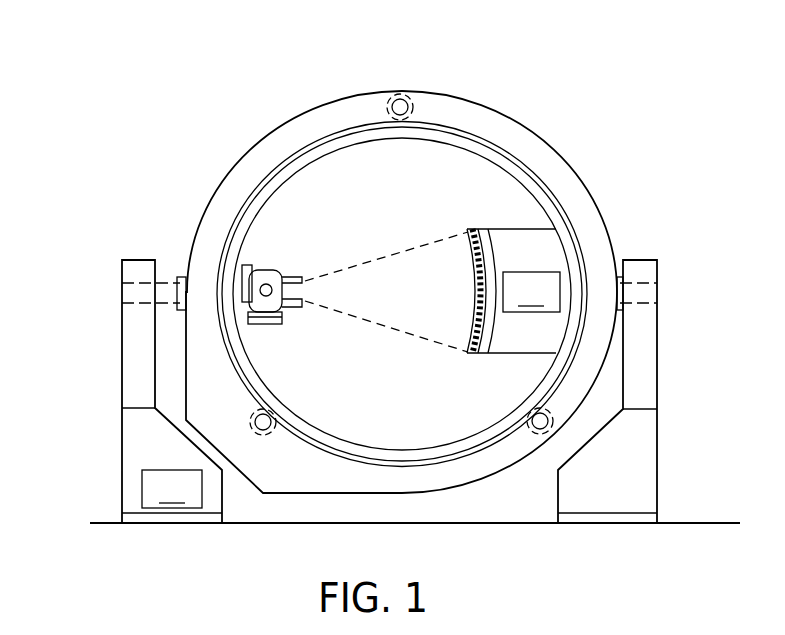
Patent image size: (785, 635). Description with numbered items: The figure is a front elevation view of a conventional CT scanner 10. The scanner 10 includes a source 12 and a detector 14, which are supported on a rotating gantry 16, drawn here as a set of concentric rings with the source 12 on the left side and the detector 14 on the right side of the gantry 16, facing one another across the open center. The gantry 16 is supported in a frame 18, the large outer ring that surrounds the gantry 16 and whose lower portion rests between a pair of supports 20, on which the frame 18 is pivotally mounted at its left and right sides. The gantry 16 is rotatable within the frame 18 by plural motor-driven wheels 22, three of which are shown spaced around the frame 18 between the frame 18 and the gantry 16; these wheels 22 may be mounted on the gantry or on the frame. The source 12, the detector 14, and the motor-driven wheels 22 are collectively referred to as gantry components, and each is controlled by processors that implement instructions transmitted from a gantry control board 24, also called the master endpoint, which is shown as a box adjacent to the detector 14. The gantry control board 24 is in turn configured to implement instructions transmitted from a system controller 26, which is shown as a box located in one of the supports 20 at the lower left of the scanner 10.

The CT scanner 10 is at (219, 91).
The source 12 is at (270, 268).
The detector 14 is at (490, 252).
The rotating gantry 16 is at (248, 212).
The frame 18 is at (600, 245).
The supports 20 is at (155, 452).
The motor-driven wheels 22 is at (401, 92).
The gantry control board 24 is at (531, 292).
The system controller 26 is at (172, 489).